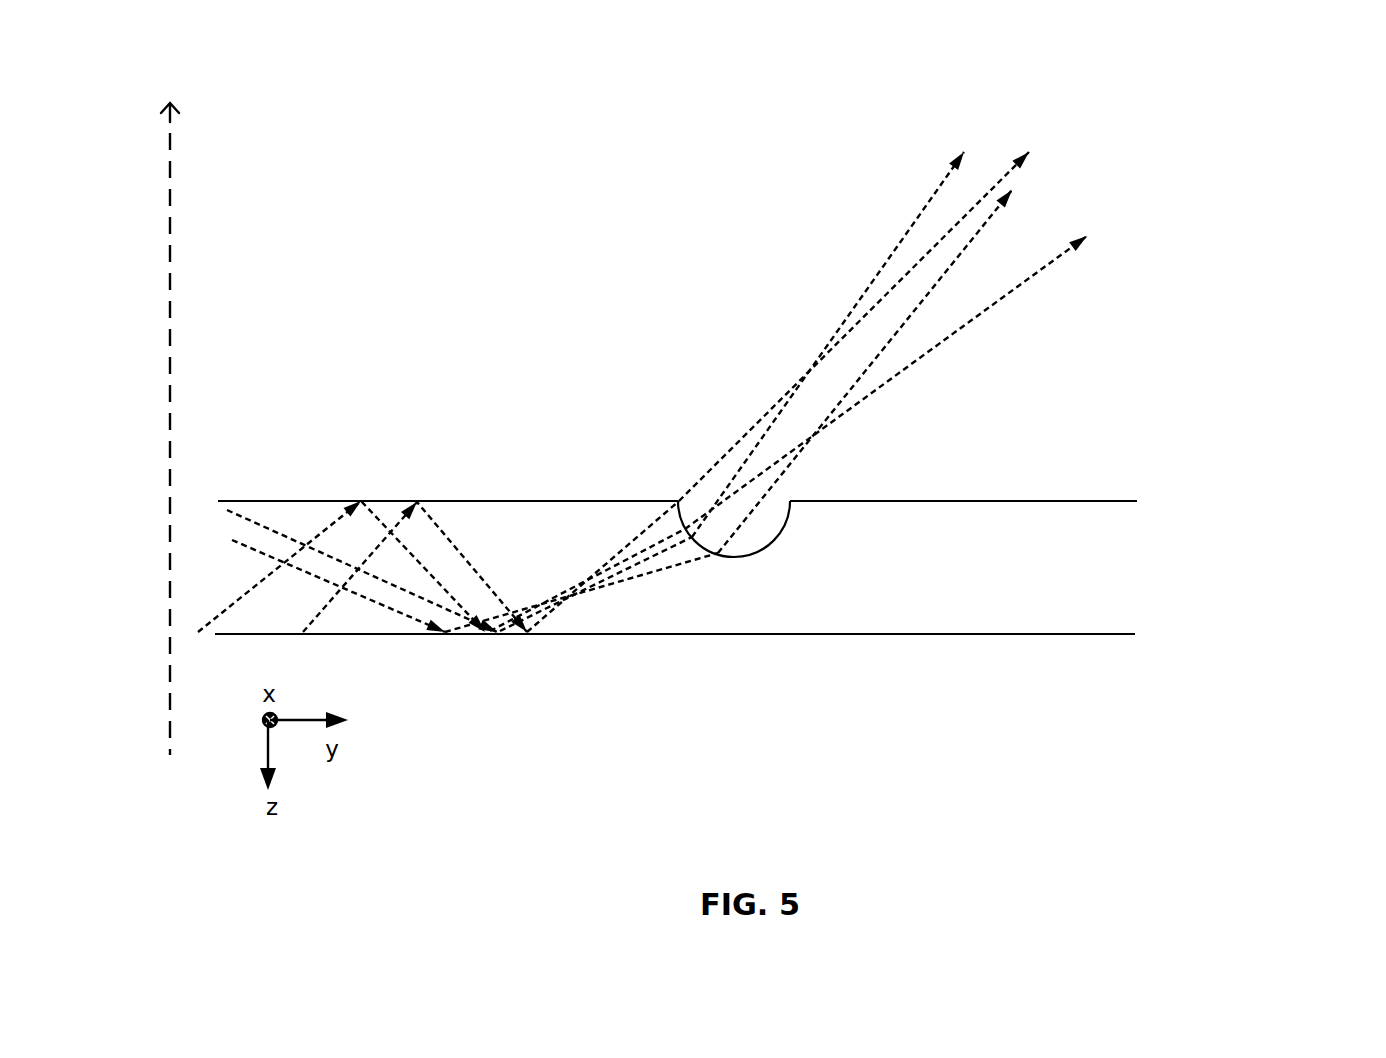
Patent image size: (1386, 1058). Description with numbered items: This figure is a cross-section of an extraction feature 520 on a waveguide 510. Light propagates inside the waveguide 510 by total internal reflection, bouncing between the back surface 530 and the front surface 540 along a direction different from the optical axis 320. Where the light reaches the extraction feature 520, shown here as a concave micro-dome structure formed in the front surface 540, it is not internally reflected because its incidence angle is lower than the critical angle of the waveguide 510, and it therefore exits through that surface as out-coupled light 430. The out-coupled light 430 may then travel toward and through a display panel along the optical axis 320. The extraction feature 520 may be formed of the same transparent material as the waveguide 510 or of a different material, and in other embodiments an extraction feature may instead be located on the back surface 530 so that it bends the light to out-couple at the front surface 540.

The optical axis 320 is at (184, 393).
The out-coupled light 430 is at (1172, 95).
The waveguide 510 is at (1032, 527).
The extraction feature 520 is at (735, 560).
The back surface 530 is at (579, 645).
The front surface 540 is at (527, 492).